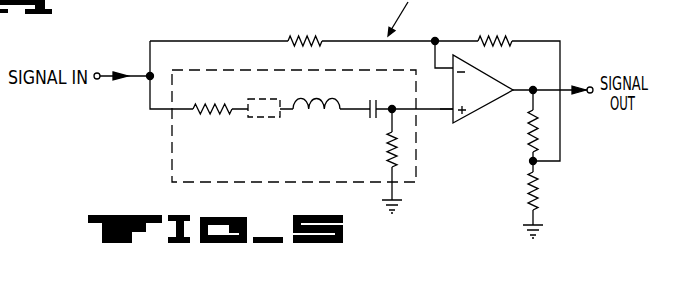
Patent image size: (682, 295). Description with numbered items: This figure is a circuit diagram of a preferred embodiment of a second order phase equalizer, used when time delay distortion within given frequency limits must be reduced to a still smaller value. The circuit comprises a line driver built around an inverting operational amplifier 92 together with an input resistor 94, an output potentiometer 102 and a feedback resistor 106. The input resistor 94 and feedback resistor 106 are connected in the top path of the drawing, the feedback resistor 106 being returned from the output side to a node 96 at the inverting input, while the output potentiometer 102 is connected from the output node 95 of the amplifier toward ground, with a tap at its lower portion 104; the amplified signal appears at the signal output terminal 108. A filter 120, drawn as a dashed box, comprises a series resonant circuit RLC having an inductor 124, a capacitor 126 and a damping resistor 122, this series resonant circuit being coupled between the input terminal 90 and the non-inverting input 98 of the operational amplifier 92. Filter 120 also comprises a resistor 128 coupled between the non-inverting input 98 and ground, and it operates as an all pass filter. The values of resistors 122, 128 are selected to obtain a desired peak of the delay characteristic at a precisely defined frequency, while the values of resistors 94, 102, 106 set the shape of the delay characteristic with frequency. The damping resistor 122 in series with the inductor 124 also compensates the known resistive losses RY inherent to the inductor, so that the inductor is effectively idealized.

The input terminal 90 is at (97, 72).
The input resistor 94 is at (305, 30).
The inverting input node 96 is at (446, 65).
The feedback resistor 106 is at (495, 29).
The inverting operational amplifier 92 is at (480, 71).
The output node 95 is at (533, 86).
The signal output terminal 108 is at (589, 86).
The filter 120 is at (280, 154).
The damping resistor 122 is at (212, 96).
The inductor 124 is at (316, 111).
The capacitor 126 is at (374, 98).
The resistor 128 is at (376, 149).
The non-inverting input 98 is at (452, 111).
The output potentiometer 102 is at (526, 103).
The resistor 104 is at (537, 164).